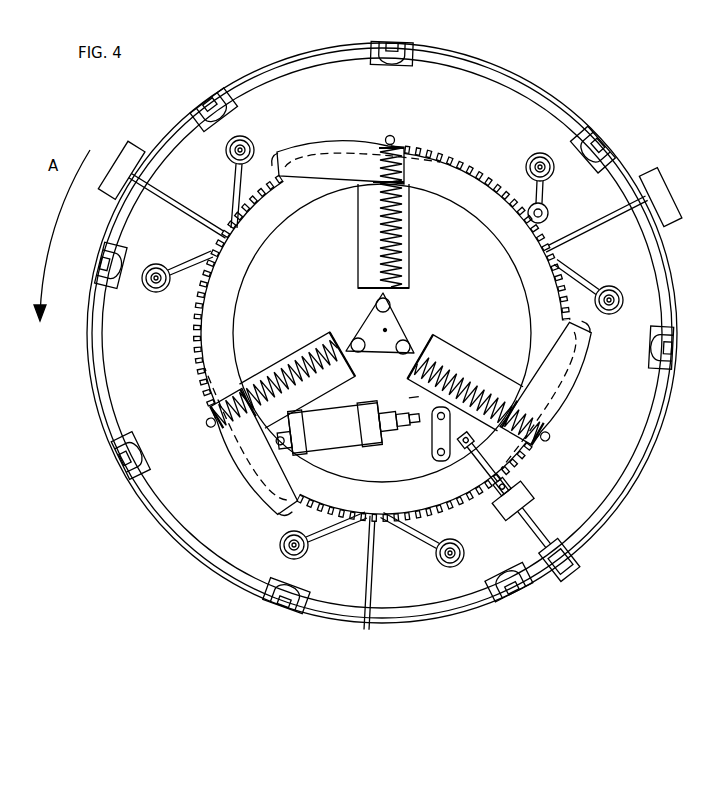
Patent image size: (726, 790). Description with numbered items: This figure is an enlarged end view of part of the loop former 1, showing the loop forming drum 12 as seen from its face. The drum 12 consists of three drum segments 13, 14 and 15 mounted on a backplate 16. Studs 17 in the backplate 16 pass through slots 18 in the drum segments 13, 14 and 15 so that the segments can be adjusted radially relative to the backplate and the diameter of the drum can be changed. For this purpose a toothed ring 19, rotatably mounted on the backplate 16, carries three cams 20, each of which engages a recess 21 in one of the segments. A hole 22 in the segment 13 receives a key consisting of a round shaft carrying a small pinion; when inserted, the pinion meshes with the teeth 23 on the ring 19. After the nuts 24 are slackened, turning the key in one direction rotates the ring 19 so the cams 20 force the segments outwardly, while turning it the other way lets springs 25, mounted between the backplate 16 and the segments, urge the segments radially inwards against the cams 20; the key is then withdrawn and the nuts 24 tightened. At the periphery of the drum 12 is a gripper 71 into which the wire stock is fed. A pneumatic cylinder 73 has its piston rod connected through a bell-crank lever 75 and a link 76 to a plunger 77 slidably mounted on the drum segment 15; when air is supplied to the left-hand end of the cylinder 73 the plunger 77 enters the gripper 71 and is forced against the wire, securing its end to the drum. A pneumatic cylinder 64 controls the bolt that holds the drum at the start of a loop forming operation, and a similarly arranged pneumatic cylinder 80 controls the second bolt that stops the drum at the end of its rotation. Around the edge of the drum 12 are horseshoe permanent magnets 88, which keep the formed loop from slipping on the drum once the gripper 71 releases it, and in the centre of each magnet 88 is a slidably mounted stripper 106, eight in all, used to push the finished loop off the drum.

The loop former 1 is at (382, 333).
The loop forming drum 12 is at (382, 339).
The drum segment 13 is at (382, 333).
The drum segment 14 is at (279, 388).
The drum segment 15 is at (607, 404).
The backplate 16 is at (381, 307).
The stud 17 is at (388, 351).
The slot 18 is at (386, 358).
The toothed ring 19 is at (382, 333).
The cam 20 is at (405, 320).
The recess 21 is at (431, 327).
The hole 22 is at (557, 214).
The teeth 23 is at (382, 329).
The nut 24 is at (394, 357).
The spring 25 is at (377, 295).
The pneumatic cylinder 64 is at (660, 186).
The gripper 71 is at (514, 524).
The pneumatic cylinder 73 is at (347, 426).
The bell-crank lever 75 is at (424, 434).
The link 76 is at (500, 461).
The plunger 77 is at (553, 534).
The pneumatic cylinder 80 is at (123, 158).
The horseshoe permanent magnet 88 is at (392, 317).
The stripper 106 is at (389, 326).